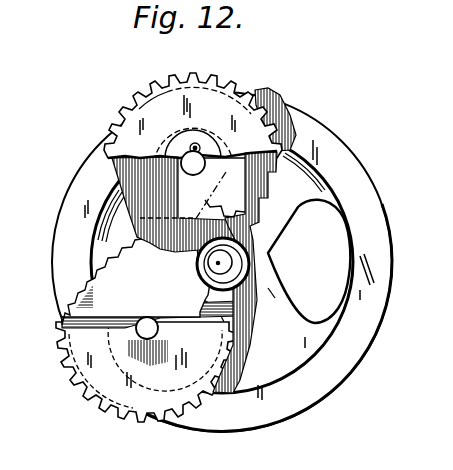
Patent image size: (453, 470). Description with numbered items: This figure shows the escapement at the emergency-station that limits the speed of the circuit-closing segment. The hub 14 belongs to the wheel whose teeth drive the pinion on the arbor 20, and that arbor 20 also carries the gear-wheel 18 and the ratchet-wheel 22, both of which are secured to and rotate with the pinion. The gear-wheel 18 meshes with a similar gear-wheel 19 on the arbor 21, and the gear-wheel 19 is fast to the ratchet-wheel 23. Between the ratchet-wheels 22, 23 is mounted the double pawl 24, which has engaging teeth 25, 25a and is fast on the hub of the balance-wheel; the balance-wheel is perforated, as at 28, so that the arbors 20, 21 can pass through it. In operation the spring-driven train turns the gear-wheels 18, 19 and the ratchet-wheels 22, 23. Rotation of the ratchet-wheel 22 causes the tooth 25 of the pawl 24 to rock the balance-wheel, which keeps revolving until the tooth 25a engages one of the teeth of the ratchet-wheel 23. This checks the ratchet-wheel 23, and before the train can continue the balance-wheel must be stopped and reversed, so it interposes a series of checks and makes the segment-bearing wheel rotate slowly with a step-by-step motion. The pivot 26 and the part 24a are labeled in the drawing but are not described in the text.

The hub 14 is at (151, 336).
The gear-wheel 18 is at (147, 372).
The gear-wheel 19 is at (193, 117).
The arbor 20 is at (143, 324).
The arbor 21 is at (193, 165).
The ratchet-wheel 22 is at (136, 279).
The ratchet-wheel 23 is at (226, 198).
The double pawl 24 is at (222, 262).
The casing lug 24a is at (267, 294).
The tooth 25 is at (192, 272).
The tooth 25a is at (213, 204).
The pivot stud 26 is at (232, 262).
The perforation 28 is at (122, 200).